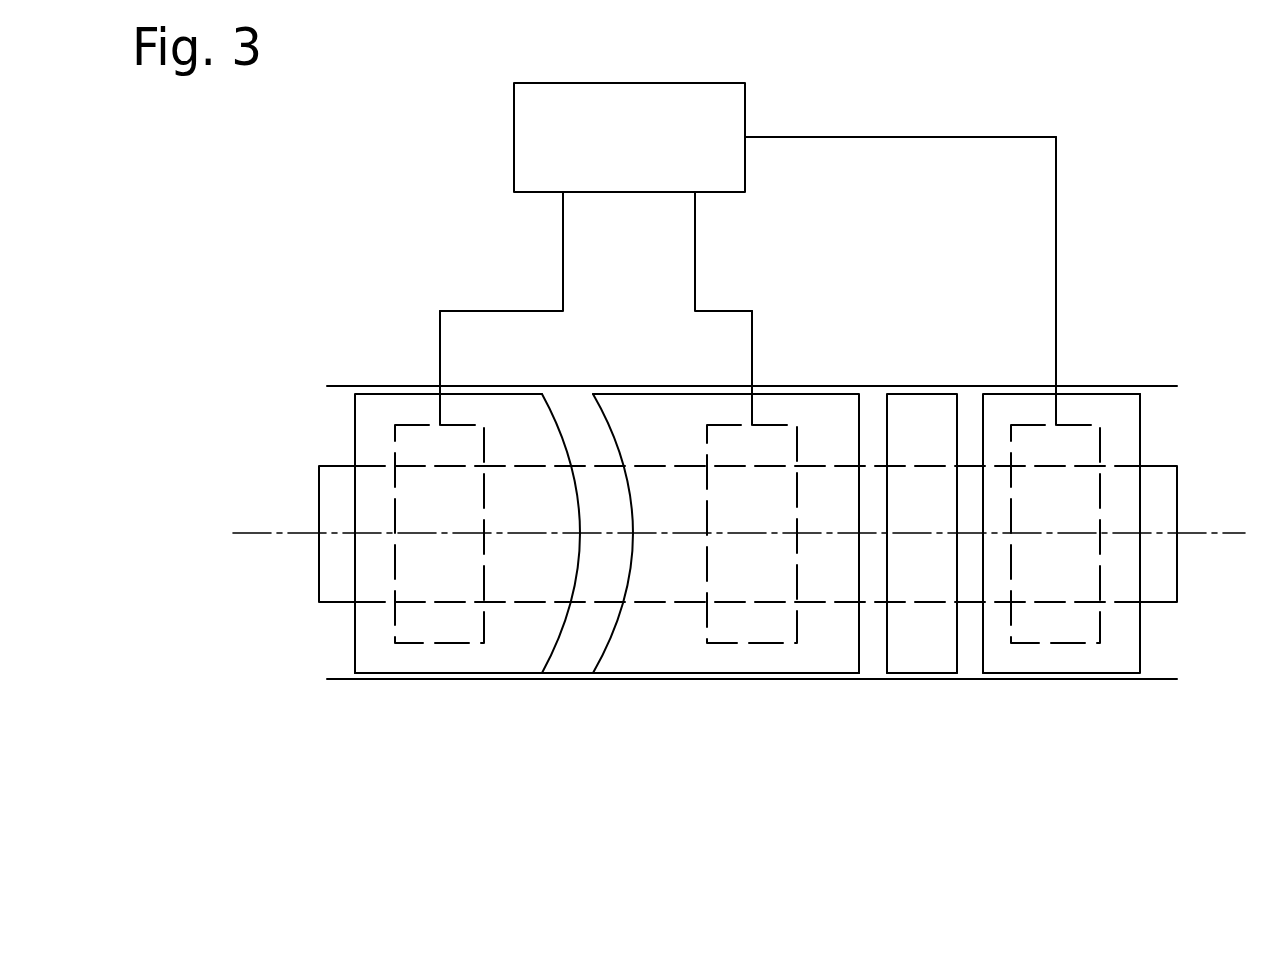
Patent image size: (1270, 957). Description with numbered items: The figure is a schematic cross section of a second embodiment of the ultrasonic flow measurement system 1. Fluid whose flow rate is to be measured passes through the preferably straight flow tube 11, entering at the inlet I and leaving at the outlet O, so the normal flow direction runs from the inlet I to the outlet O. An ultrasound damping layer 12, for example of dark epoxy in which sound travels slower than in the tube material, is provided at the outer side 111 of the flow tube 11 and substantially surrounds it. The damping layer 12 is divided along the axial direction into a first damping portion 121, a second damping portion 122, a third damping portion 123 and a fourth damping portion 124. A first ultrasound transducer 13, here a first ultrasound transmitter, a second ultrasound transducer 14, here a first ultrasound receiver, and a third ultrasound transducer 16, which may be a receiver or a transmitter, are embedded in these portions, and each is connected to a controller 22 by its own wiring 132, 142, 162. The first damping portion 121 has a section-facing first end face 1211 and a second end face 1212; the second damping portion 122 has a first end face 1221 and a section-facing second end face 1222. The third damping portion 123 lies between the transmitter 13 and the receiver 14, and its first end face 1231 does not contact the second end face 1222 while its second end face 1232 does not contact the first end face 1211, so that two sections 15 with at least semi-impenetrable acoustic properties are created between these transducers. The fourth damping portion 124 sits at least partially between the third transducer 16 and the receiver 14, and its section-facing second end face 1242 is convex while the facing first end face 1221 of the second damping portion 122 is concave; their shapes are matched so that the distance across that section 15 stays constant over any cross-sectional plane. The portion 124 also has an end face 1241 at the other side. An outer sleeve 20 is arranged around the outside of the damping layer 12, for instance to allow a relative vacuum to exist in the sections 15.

The ultrasonic flow measurement system 1 is at (798, 696).
The flow tube 11 is at (660, 603).
The outer side 111 is at (328, 568).
The ultrasound damping layer 12 is at (371, 694).
The first damping portion 121 is at (1082, 660).
The first end face 1211 is at (985, 648).
The second end face 1212 is at (1145, 432).
The second damping portion 122 is at (735, 660).
The first end face 1221 is at (612, 642).
The second end face 1222 is at (858, 643).
The third damping portion 123 is at (920, 407).
The first end face 1231 is at (915, 645).
The second end face 1232 is at (957, 643).
The fourth damping portion 124 is at (423, 658).
The fourth housing end wall 1241 is at (354, 623).
The second end face 1242 is at (560, 640).
The first ultrasound transducer 13 is at (1088, 410).
The wiring 132 is at (853, 138).
The second ultrasound transducer 14 is at (777, 413).
The wiring 142 is at (695, 267).
The section 15 is at (577, 413).
The third ultrasound transducer 16 is at (418, 425).
The wiring 162 is at (563, 250).
The outer sleeve 20 is at (1167, 388).
The controller 22 is at (580, 145).
The outlet O is at (318, 506).
The inlet I is at (1177, 498).